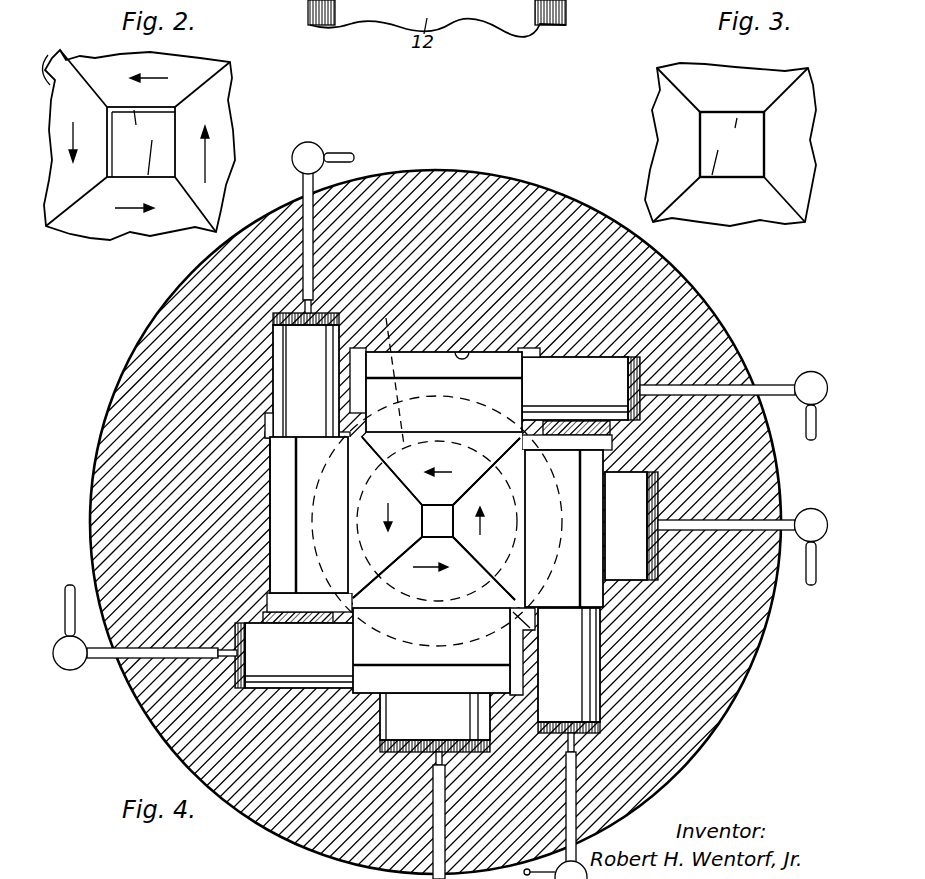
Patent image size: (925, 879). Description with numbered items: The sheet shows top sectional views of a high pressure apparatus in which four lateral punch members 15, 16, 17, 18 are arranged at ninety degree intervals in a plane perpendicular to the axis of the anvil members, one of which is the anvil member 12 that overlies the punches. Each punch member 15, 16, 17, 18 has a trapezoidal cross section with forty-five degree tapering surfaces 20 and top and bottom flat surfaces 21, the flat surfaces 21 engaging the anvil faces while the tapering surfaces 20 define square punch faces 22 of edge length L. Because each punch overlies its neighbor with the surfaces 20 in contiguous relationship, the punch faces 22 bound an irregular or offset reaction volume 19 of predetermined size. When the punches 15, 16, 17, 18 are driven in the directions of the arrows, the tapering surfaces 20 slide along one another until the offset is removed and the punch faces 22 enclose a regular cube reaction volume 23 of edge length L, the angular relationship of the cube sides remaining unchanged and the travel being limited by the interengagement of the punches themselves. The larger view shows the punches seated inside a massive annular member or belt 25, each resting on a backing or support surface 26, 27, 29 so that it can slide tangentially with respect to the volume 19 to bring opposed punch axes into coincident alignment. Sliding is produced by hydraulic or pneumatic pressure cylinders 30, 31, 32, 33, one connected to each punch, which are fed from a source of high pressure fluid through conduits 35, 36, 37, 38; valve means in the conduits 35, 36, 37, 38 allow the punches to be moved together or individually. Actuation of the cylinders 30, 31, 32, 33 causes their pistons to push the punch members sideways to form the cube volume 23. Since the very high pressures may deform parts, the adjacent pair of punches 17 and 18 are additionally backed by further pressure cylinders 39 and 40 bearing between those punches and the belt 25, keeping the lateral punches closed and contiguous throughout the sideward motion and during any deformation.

In FIG. 4, the anvil member 12 is at (386, 370).
In FIG. 2, the lateral punch member 15 is at (70, 64).
In FIG. 3, the lateral punch member 15 is at (660, 142).
In FIG. 4, the lateral punch member 15 is at (383, 497).
In FIG. 2, the lateral punch member 16 is at (190, 62).
In FIG. 3, the lateral punch member 16 is at (706, 64).
In FIG. 4, the lateral punch member 16 is at (442, 459).
In FIG. 2, the lateral punch member 17 is at (226, 170).
In FIG. 3, the lateral punch member 17 is at (800, 196).
In FIG. 4, the lateral punch member 17 is at (499, 570).
In FIG. 2, the lateral punch member 18 is at (82, 240).
In FIG. 3, the lateral punch member 18 is at (757, 225).
In FIG. 4, the lateral punch member 18 is at (448, 601).
In FIG. 2, the reaction volume 19 is at (139, 166).
In FIG. 4, the reaction volume 19 is at (449, 531).
In FIG. 2, the tapering surfaces 20 is at (100, 90).
In FIG. 3, the tapering surfaces 20 is at (782, 92).
In FIG. 3, the flat surfaces 21 is at (745, 92).
In FIG. 4, the flat surfaces 21 is at (414, 372).
In FIG. 2, the punch faces 22 is at (173, 138).
In FIG. 3, the punch faces 22 is at (762, 137).
In FIG. 3, the regular cube reaction volume 23 is at (753, 170).
In FIG. 4, the annular member or belt 25 is at (128, 398).
In FIG. 4, the backing or support surface 26 is at (270, 490).
In FIG. 4, the backing or support surface 27 is at (462, 352).
In FIG. 4, the backing or support surface 29 is at (602, 590).
In FIG. 4, the pressure cylinder 30 is at (287, 380).
In FIG. 4, the pressure cylinder 31 is at (578, 372).
In FIG. 4, the pressure cylinder 32 is at (580, 663).
In FIG. 4, the pressure cylinder 33 is at (296, 658).
In FIG. 4, the conduit 35 is at (303, 184).
In FIG. 4, the conduit 36 is at (777, 384).
In FIG. 4, the conduit 37 is at (576, 780).
In FIG. 4, the conduit 38 is at (107, 660).
In FIG. 4, the further pressure cylinder 39 is at (628, 490).
In FIG. 4, the further pressure cylinder 40 is at (452, 727).